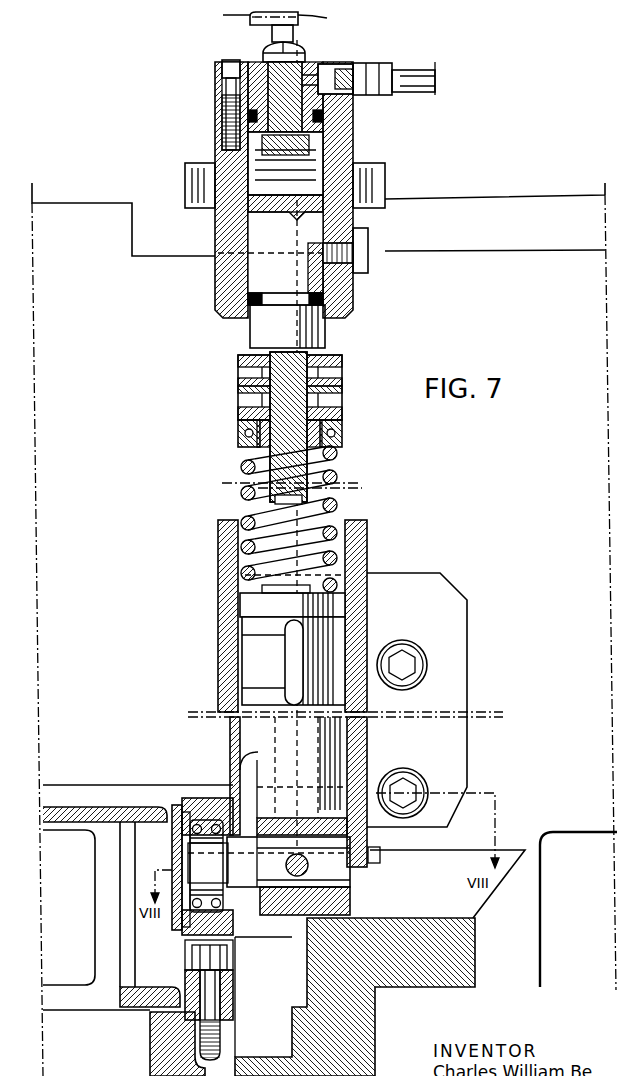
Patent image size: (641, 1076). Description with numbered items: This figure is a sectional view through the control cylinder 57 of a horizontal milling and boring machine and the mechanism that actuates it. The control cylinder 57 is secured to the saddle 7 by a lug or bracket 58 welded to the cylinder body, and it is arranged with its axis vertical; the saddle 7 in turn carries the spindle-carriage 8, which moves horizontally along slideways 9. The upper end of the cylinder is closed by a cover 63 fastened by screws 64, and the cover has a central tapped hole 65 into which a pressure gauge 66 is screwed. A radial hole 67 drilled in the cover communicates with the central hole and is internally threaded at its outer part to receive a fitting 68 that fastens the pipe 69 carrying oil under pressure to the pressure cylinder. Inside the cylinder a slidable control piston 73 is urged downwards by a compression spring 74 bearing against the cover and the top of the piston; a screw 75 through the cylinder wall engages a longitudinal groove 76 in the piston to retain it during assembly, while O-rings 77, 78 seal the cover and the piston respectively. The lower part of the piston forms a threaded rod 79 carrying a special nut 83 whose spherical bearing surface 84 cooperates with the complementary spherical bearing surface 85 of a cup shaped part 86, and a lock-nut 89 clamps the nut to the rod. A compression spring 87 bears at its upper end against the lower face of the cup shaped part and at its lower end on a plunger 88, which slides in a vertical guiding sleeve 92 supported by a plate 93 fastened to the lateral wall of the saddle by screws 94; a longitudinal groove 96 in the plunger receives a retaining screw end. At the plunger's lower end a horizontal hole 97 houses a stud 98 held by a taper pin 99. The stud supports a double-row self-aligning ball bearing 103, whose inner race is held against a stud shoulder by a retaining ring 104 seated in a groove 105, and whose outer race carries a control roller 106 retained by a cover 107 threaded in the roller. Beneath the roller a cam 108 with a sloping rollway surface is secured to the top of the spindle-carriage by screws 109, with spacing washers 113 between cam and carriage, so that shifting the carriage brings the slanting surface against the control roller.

The saddle 7 is at (84, 218).
The spindle-carriage 8 is at (50, 808).
The slideways 9 is at (413, 915).
The control cylinder 57 is at (300, 105).
The lug or bracket 58 is at (192, 180).
The cover 63 is at (222, 84).
The screws 64 is at (228, 60).
The tapped hole 65 is at (260, 60).
The pressure gauge 66 is at (284, 18).
The radial hole 67 is at (322, 63).
The fitting 68 is at (358, 63).
The pipe 69 is at (413, 72).
The control piston 73 is at (258, 275).
The compression spring 74 is at (330, 140).
The screw 75 is at (337, 267).
The longitudinal groove 76 is at (323, 278).
The O-ring 77 is at (323, 115).
The O-ring 78 is at (383, 187).
The threaded rod 79 is at (307, 370).
The special nut 83 is at (340, 412).
The spherical bearing surface 84 is at (340, 430).
The complementary spherical bearing surface 85 is at (240, 412).
The cup shaped part 86 is at (243, 433).
The compression spring 87 is at (243, 468).
The plunger 88 is at (248, 655).
The lock-nut 89 is at (238, 362).
The guiding sleeve 92 is at (222, 562).
The plate 93 is at (458, 600).
The screws 94 is at (403, 667).
The longitudinal groove 96 is at (293, 665).
The horizontal hole 97 is at (347, 880).
The stud 98 is at (243, 897).
The taper pin 99 is at (297, 890).
The double-row self-aligning ball bearing 103 is at (172, 803).
The retaining ring 104 is at (193, 880).
The groove 105 is at (178, 853).
The control roller 106 is at (205, 798).
The cover 107 is at (177, 920).
The cam 108 is at (187, 982).
The screws 109 is at (230, 987).
The spacing washers 113 is at (233, 1023).